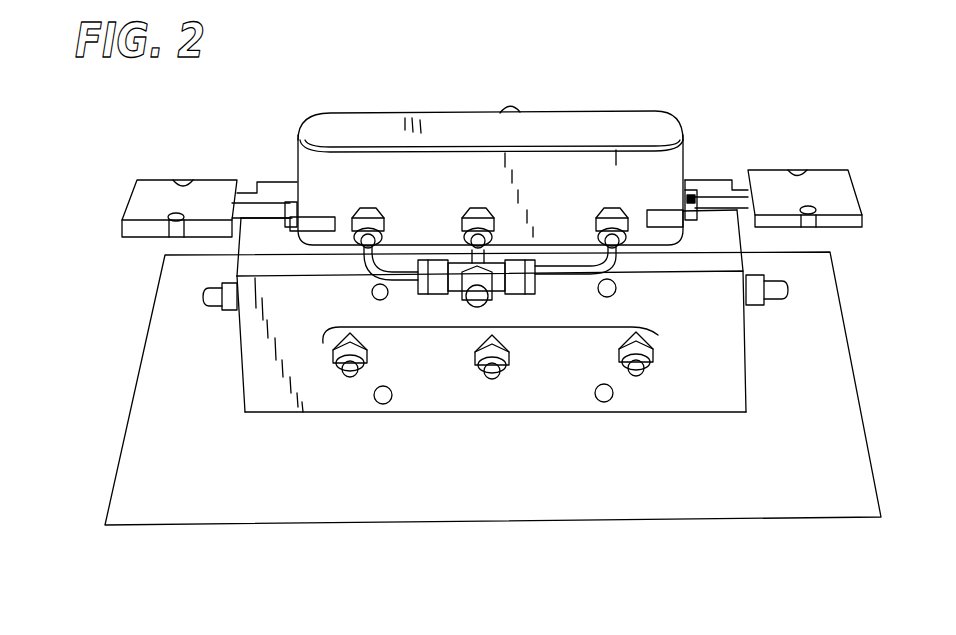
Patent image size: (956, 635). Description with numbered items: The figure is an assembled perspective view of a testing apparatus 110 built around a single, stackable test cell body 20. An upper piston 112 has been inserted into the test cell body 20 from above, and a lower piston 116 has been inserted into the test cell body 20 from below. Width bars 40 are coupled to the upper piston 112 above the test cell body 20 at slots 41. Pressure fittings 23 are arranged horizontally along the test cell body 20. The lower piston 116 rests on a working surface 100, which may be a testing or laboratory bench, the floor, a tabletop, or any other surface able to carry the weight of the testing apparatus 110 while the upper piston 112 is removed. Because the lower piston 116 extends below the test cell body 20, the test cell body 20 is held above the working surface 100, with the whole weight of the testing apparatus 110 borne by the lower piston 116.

The working surface 100 is at (743, 469).
The test cell body 20 is at (728, 367).
The lower piston 116 is at (562, 410).
The pressure fittings 23 is at (490, 327).
The testing apparatus 110 is at (449, 170).
The upper piston 112 is at (536, 108).
The width bars 40 is at (202, 190).
The slots 41 is at (692, 197).